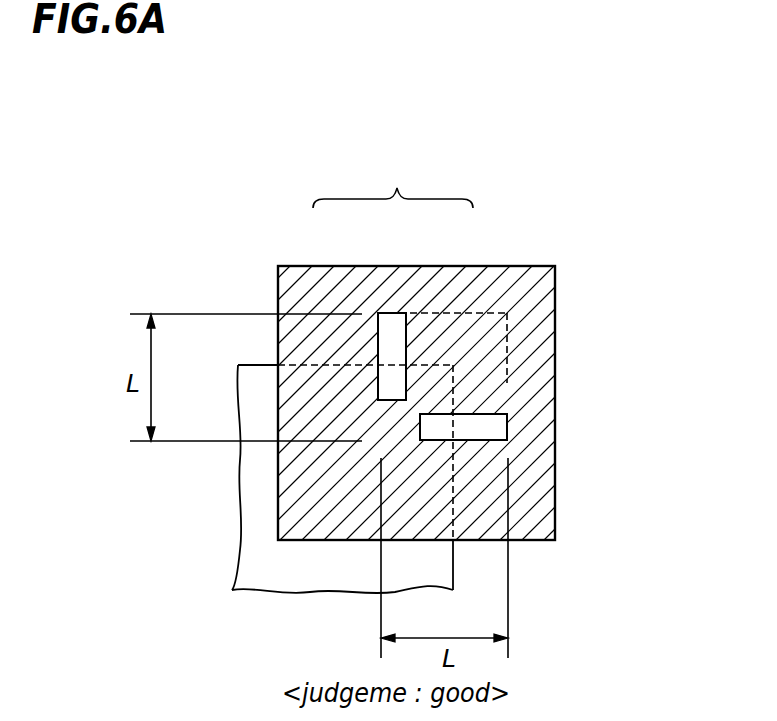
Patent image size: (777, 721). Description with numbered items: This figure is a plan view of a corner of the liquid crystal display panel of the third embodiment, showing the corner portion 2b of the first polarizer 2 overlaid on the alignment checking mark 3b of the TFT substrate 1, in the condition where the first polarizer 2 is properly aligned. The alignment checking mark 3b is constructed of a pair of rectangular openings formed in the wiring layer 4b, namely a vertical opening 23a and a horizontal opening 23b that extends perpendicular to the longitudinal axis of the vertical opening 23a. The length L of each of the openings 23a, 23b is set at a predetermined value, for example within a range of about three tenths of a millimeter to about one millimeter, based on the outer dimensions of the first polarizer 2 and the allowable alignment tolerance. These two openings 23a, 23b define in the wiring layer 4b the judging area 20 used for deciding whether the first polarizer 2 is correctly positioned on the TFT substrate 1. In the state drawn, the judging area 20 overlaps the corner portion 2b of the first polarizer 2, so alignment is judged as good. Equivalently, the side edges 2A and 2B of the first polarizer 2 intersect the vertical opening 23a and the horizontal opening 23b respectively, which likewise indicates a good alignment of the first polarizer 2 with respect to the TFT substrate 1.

The TFT substrate 1 is at (210, 240).
The first polarizer 2 is at (252, 540).
The side edge of the first polarizer 2A is at (325, 362).
The side edge of the first polarizer 2B is at (453, 561).
The corner portion of the first polarizer 2b is at (453, 365).
The judging area 20 is at (507, 383).
The alignment checking mark 3b is at (393, 179).
The vertical opening 23a is at (390, 322).
The horizontal opening 23b is at (437, 420).
The wiring layer 4b is at (537, 468).